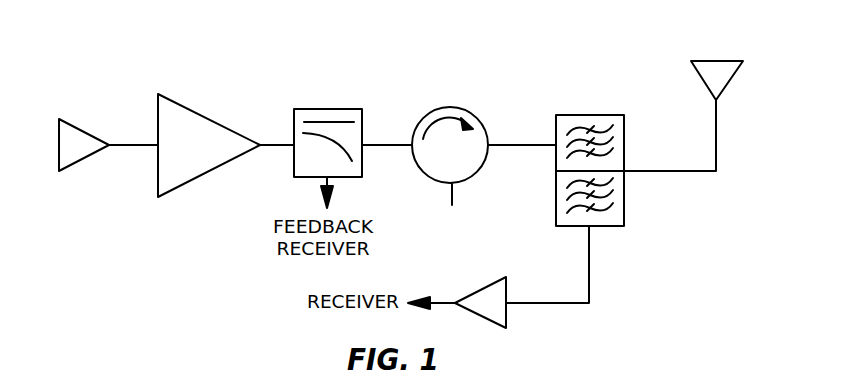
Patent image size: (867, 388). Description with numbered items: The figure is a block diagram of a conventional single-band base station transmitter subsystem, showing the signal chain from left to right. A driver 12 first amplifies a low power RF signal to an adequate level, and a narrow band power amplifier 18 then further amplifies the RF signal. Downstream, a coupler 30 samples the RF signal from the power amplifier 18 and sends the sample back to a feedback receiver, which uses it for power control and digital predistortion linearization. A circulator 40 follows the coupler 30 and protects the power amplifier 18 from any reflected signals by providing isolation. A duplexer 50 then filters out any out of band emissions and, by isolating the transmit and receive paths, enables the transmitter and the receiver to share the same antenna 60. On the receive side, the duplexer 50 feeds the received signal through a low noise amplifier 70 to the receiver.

The driver 12 is at (75, 114).
The narrow band power amplifier 18 is at (209, 127).
The coupler 30 is at (323, 133).
The circulator 40 is at (452, 131).
The duplexer 50 is at (586, 142).
The antenna 60 is at (717, 56).
The low noise amplifier 70 is at (478, 292).